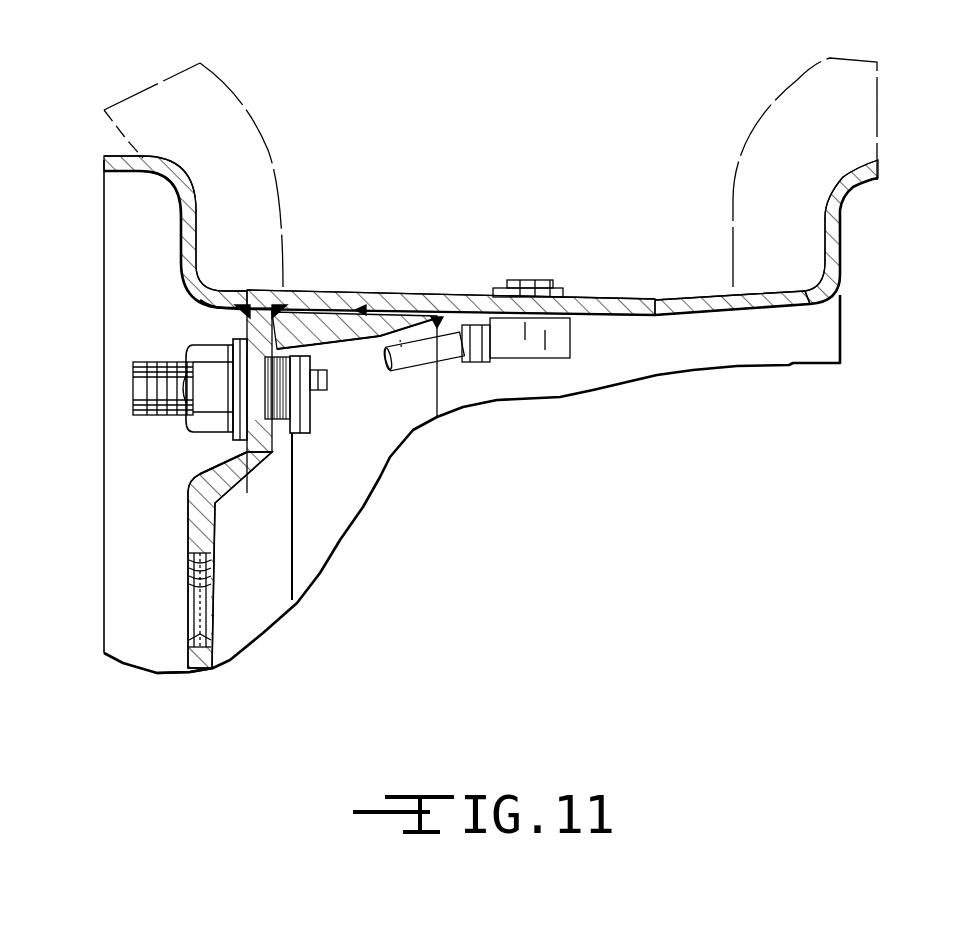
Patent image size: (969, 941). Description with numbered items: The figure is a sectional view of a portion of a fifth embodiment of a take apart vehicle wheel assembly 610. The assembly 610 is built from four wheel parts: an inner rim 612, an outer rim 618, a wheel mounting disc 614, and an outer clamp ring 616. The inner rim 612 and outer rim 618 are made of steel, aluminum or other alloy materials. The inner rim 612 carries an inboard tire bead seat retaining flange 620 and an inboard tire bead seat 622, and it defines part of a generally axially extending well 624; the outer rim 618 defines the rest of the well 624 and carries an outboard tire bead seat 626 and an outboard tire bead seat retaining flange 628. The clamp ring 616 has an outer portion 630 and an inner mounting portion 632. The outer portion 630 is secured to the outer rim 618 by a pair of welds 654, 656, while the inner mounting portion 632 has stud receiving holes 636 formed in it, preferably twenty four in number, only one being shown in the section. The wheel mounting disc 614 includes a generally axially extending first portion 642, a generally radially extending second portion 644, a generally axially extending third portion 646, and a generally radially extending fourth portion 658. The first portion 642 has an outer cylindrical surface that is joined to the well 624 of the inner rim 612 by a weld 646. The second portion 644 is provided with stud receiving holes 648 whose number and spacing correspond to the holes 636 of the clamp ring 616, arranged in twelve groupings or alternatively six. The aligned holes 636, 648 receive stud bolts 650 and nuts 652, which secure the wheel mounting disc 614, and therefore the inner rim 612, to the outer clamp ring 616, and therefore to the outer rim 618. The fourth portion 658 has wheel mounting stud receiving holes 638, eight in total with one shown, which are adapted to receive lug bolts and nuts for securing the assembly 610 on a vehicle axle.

The take apart vehicle wheel assembly 610 is at (81, 243).
The inner rim 612 is at (738, 338).
The wheel mounting disc 614 is at (281, 481).
The outer clamp ring 616 is at (237, 333).
The outer rim 618 is at (253, 260).
The inboard tire bead seat retaining flange 620 is at (833, 198).
The inboard tire bead seat 622 is at (773, 289).
The well 624 is at (428, 297).
The outboard tire bead seat 626 is at (203, 277).
The outboard tire bead seat retaining flange 628 is at (143, 160).
The outer portion 630 is at (248, 307).
The inner mounting portion 632 is at (250, 455).
The stud receiving holes 636 is at (213, 433).
The wheel mounting stud receiving holes 638 is at (190, 554).
The first portion 642 is at (407, 323).
The second portion 644 is at (287, 441).
The weld 646 is at (463, 357).
The stud receiving holes 648 is at (327, 387).
The stud bolts 650 is at (137, 389).
The nuts 652 is at (193, 419).
The weld 654 is at (237, 314).
The weld 656 is at (277, 348).
The fourth portion 658 is at (192, 666).